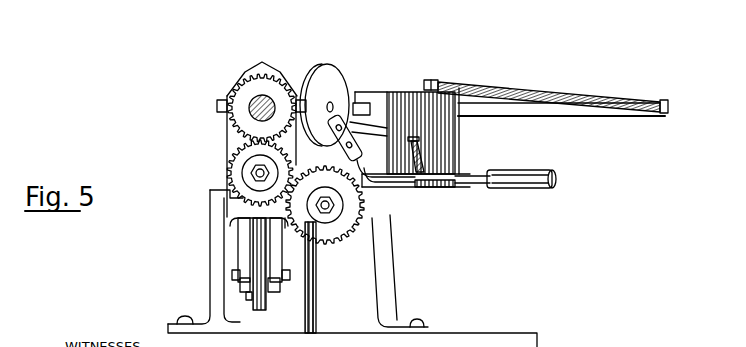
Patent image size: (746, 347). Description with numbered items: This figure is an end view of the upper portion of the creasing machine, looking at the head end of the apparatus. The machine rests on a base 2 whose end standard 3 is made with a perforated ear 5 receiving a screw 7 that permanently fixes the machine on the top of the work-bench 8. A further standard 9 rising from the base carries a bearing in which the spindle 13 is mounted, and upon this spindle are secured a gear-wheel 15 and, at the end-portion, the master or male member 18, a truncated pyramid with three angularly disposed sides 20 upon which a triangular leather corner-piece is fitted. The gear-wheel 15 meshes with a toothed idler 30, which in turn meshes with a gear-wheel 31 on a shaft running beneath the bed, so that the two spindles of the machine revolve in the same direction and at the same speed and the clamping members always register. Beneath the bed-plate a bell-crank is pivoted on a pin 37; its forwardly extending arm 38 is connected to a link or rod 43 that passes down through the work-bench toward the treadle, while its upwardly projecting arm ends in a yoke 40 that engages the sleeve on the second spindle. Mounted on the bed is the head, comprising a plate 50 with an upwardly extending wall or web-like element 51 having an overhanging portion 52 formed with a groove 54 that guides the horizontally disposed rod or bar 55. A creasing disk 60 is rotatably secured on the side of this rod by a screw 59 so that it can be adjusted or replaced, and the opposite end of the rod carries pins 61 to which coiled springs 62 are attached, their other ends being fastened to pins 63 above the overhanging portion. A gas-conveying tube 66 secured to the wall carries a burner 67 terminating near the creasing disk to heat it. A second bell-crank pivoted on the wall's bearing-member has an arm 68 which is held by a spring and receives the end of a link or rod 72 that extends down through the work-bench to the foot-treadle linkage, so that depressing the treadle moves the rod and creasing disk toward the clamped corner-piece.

The base 2 is at (214, 197).
The standard 3 is at (212, 240).
The perforated ear 5 is at (166, 327).
The screw 7 is at (182, 322).
The work-bench 8 is at (487, 346).
The standard 9 is at (232, 157).
The spindle 13 is at (266, 100).
The gear-wheel 15 is at (245, 90).
The master or male member 18 is at (262, 78).
The angularly disposed side 20 is at (247, 252).
The toothed idler 30 is at (230, 178).
The gear-wheel 31 is at (362, 222).
The pin 37 is at (232, 282).
The forwardly extending arm 38 is at (250, 292).
The yoke 40 is at (225, 114).
The link or rod 43 is at (263, 292).
The plate 50 is at (444, 192).
The wall or web-like element 51 is at (456, 158).
The overhanging portion 52 is at (434, 82).
The groove 54 is at (380, 105).
The rod or bar 55 is at (366, 100).
The screw 59 is at (333, 103).
The creasing disk 60 is at (323, 85).
The screw or pin 61 is at (668, 107).
The coiled spring 62 is at (545, 92).
The screw or pin 63 is at (443, 85).
The gas-conveying tube 66 is at (478, 184).
The burner 67 is at (333, 152).
The arm 68 is at (368, 145).
The link or rod 72 is at (318, 311).